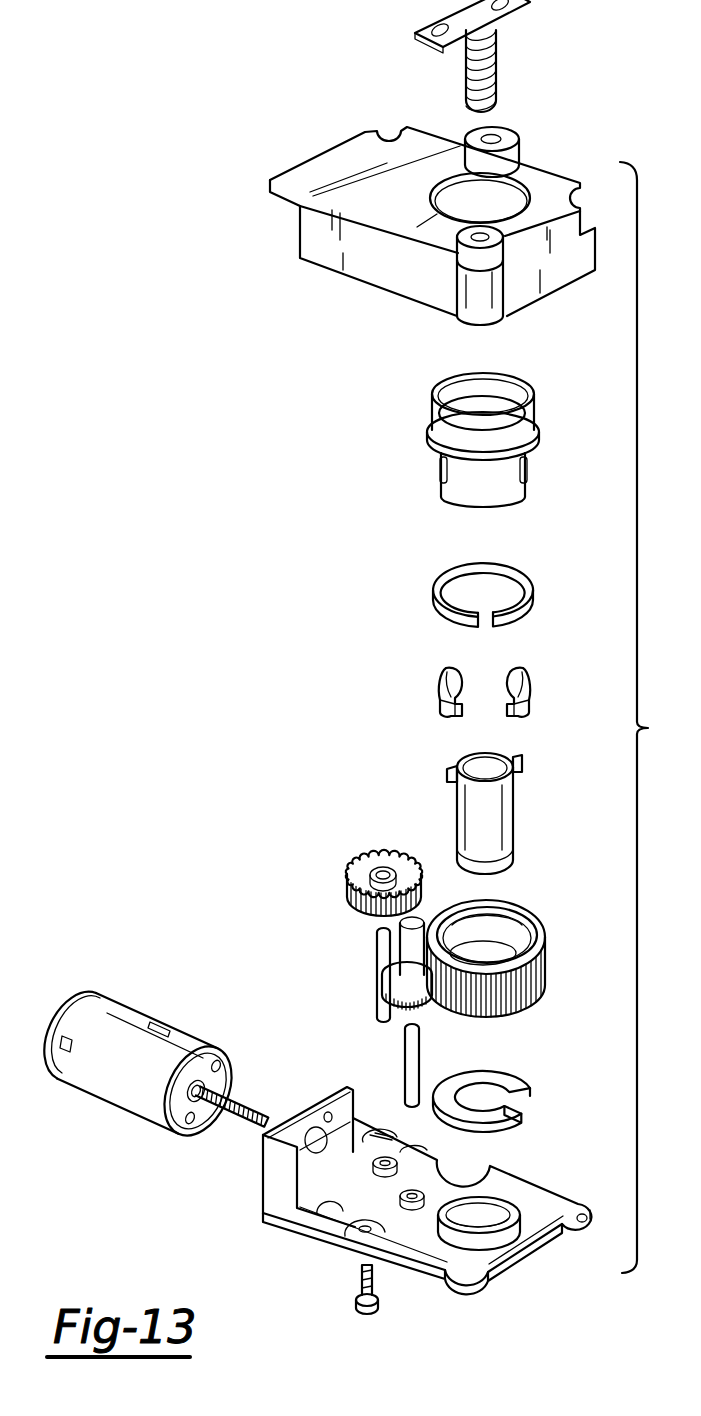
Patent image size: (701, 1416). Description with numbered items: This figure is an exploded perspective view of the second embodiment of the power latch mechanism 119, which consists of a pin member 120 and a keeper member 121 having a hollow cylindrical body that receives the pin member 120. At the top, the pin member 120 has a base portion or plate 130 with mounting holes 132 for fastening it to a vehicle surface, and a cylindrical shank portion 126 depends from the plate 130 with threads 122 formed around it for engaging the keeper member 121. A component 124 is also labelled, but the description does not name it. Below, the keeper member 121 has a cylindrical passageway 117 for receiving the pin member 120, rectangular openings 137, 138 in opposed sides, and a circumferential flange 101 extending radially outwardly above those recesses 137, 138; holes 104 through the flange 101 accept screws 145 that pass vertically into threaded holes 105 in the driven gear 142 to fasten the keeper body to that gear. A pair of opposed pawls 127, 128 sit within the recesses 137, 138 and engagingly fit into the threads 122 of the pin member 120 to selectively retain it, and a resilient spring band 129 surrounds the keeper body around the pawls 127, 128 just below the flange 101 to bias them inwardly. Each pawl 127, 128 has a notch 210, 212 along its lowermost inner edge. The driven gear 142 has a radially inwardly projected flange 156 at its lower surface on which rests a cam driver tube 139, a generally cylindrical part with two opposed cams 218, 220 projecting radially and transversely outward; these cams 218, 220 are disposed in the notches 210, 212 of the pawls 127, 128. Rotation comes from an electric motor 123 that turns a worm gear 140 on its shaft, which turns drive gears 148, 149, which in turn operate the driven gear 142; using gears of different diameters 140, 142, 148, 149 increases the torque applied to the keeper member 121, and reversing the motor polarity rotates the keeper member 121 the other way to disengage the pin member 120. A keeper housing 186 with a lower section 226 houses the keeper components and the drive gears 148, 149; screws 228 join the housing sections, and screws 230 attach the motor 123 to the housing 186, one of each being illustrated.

The circumferential flange 101 is at (536, 422).
The holes 104 is at (538, 442).
The threaded holes 105 is at (509, 914).
The cylindrical passageway 117 is at (462, 414).
The power latch mechanism 119 is at (307, 452).
The pin member 120 is at (503, 52).
The keeper member 121 is at (527, 388).
The threads 122 is at (497, 80).
The electric motor 123 is at (130, 1116).
The housing block 124 is at (405, 273).
The cylindrical shank portion 126 is at (466, 77).
The pawl 127 is at (440, 683).
The pawl 128 is at (524, 673).
The resilient spring band 129 is at (433, 593).
The base portion or plate 130 is at (441, 24).
The mounting holes 132 is at (538, 0).
The rectangular opening 137 is at (440, 460).
The rectangular opening 138 is at (525, 468).
The cam driver tube 139 is at (514, 838).
The worm gear 140 is at (312, 1078).
The driven gear 142 is at (546, 983).
The screws 145 is at (432, 389).
The drive gear 148 is at (355, 869).
The drive gear 149 is at (378, 988).
The radially inwardly projected flange 156 is at (543, 937).
The keeper housing 186 is at (234, 1193).
The notch 210 is at (462, 714).
The notch 212 is at (512, 720).
The cam 218 is at (452, 778).
The cam 220 is at (518, 762).
The lower section 226 is at (342, 1238).
The screws 228 is at (357, 1293).
The screws 230 is at (358, 1130).